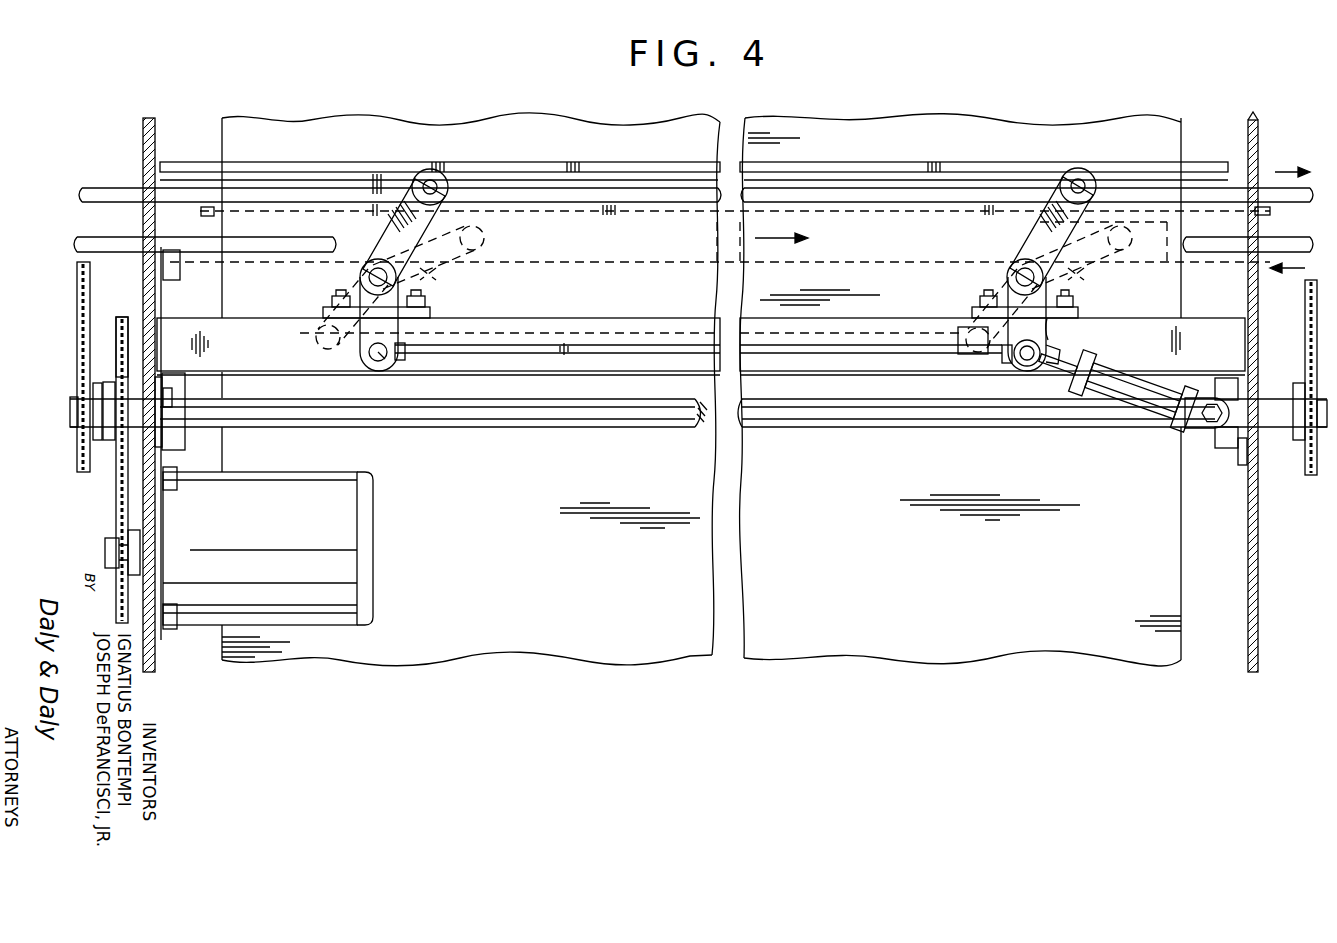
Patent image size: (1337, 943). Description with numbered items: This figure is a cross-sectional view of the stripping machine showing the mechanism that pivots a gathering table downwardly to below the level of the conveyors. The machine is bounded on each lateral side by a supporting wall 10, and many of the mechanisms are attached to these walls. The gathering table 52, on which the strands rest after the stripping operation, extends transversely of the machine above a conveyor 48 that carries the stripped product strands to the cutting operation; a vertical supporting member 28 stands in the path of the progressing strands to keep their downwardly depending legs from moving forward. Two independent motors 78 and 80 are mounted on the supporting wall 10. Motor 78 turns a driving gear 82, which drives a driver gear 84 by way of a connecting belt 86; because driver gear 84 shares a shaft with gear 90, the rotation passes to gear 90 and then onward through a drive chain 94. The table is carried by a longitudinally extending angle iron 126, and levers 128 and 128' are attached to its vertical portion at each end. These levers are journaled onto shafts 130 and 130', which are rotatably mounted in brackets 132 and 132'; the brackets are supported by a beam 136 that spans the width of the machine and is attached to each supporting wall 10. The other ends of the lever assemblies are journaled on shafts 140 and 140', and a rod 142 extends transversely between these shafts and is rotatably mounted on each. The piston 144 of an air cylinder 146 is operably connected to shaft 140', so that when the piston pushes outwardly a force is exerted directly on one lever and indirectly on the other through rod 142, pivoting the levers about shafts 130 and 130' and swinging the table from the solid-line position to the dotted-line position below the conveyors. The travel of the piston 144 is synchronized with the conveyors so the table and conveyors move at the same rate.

The supporting wall 10 is at (144, 128).
The vertical supporting member 28 is at (950, 601).
The conveyor 48 is at (118, 190).
The gathering table 52 is at (500, 163).
The motor 78 is at (350, 570).
The motor 80 is at (298, 392).
The driving gear 82 is at (140, 554).
The driver gear 84 is at (121, 317).
The connecting belt 86 is at (116, 495).
The gear 90 is at (77, 438).
The drive chain 94 is at (77, 322).
The angle iron 126 is at (656, 182).
The lever 128 is at (411, 270).
The lever 128' is at (1063, 269).
The shaft 130 is at (350, 277).
The shaft 130' is at (998, 277).
The bracket 132 is at (360, 303).
The bracket 132' is at (1048, 302).
The beam 136 is at (270, 349).
The shaft 140 is at (351, 365).
The shaft 140' is at (999, 361).
The rod 142 is at (605, 330).
The piston 144 is at (1065, 341).
The air cylinder 146 is at (1146, 405).